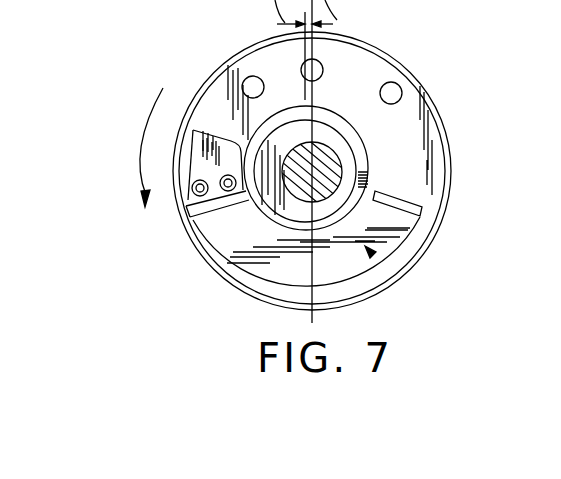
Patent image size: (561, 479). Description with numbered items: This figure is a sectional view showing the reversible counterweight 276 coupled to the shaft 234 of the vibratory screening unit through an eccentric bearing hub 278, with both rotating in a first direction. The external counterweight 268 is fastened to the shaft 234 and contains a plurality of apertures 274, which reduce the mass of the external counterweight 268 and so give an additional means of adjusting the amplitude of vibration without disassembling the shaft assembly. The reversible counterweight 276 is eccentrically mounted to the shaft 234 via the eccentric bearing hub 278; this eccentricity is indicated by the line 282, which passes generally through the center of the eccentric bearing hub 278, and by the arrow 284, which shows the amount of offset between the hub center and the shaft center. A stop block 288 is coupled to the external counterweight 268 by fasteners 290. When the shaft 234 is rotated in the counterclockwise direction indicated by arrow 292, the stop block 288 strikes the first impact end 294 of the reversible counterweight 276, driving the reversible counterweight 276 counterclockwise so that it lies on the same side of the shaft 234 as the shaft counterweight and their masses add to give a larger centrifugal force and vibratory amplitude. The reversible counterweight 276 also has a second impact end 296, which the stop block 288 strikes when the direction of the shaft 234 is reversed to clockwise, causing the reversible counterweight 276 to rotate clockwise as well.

The shaft 234 is at (336, 160).
The external counterweight 268 is at (417, 97).
The apertures 274 is at (247, 80).
The reversible counterweight 276 is at (374, 256).
The eccentric bearing hub 278 is at (334, 136).
The line 282 is at (277, 24).
The arrow 284 is at (333, 24).
The stop block 288 is at (197, 131).
The fasteners 290 is at (193, 193).
The arrow 292 is at (137, 183).
The first impact end 294 is at (188, 213).
The second impact end 296 is at (424, 205).